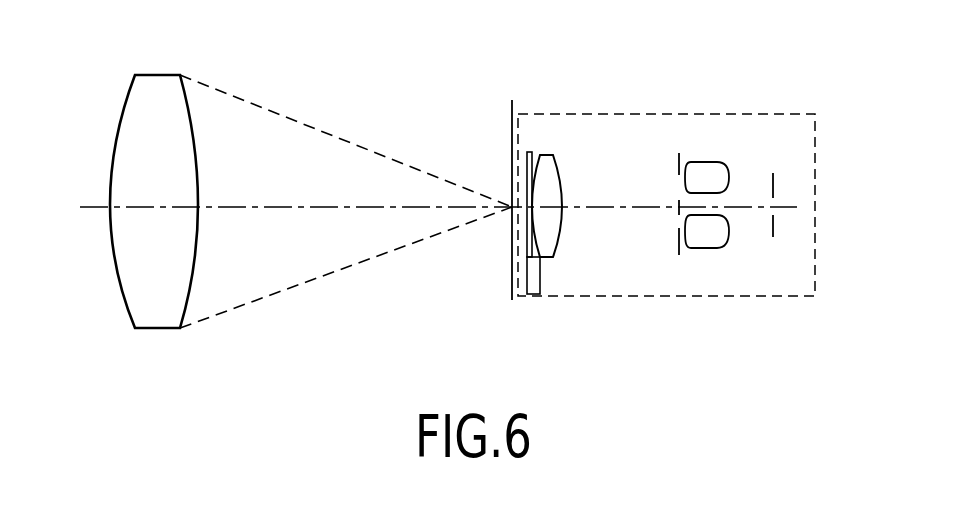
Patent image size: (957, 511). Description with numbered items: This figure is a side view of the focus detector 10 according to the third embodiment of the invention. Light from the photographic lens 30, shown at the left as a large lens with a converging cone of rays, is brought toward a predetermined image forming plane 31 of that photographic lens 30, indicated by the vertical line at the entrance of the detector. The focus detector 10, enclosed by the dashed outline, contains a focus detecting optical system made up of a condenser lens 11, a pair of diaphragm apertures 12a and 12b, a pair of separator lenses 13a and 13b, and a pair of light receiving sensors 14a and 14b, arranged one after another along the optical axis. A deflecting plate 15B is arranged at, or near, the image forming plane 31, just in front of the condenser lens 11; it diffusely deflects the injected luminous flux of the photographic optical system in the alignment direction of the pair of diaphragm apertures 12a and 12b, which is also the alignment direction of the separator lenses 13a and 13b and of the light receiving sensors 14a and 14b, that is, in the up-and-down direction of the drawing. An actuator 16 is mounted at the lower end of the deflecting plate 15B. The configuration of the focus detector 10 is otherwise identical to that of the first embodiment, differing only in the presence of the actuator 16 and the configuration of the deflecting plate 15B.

The photographic lens 30 is at (150, 331).
The predetermined image forming plane 31 is at (512, 283).
The focus detector 10 is at (670, 296).
The deflecting plate 15B is at (530, 152).
The actuator 16 is at (540, 278).
The condenser lens 11 is at (557, 250).
The diaphragm aperture 12a is at (677, 184).
The diaphragm aperture 12b is at (677, 230).
The separator lens 13a is at (702, 160).
The separator lens 13b is at (708, 248).
The light receiving sensor 14a is at (772, 188).
The light receiving sensor 14b is at (772, 237).